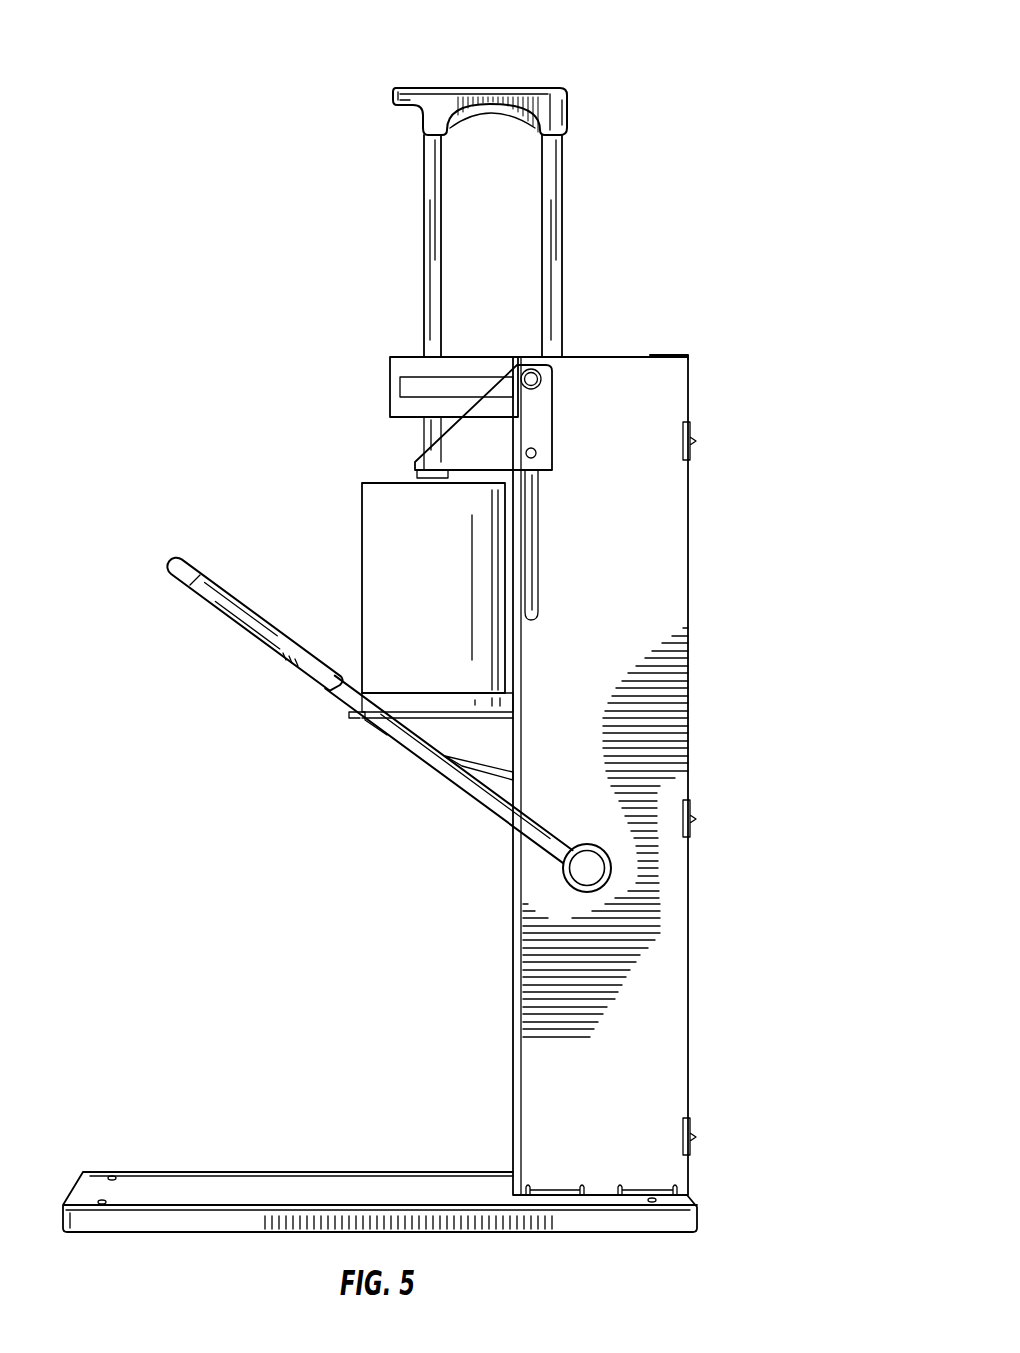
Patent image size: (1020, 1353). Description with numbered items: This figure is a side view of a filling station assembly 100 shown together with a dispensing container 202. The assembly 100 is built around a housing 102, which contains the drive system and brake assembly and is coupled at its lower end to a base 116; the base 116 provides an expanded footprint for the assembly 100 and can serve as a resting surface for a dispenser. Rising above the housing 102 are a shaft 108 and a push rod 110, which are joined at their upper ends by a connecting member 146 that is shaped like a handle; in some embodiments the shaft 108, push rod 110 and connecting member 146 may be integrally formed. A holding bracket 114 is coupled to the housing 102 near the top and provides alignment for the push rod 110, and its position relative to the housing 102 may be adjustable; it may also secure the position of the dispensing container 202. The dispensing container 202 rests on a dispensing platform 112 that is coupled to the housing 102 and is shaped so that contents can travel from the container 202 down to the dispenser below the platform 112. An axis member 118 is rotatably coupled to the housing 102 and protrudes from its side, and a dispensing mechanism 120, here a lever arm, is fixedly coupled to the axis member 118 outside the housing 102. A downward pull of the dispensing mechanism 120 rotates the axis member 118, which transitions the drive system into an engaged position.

The filling station assembly 100 is at (710, 265).
The housing 102 is at (688, 748).
The shaft 108 is at (562, 210).
The push rod 110 is at (424, 200).
The dispensing platform 112 is at (349, 718).
The holding bracket 114 is at (552, 435).
The base 116 is at (287, 1175).
The axis member 118 is at (611, 870).
The dispensing mechanism 120 is at (218, 600).
The connecting member 146 is at (578, 108).
The dispensing container 202 is at (362, 535).